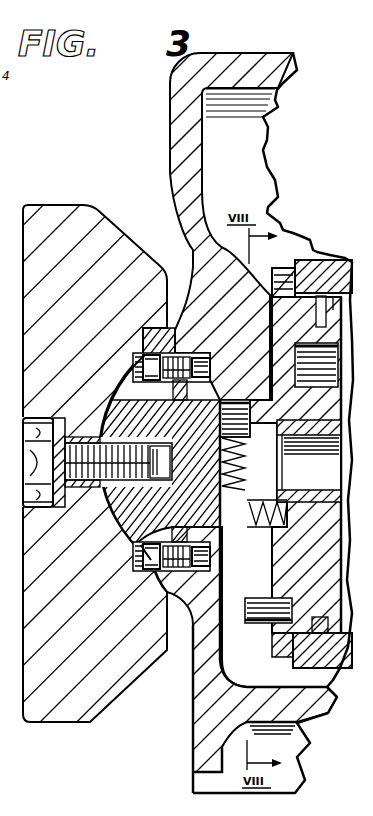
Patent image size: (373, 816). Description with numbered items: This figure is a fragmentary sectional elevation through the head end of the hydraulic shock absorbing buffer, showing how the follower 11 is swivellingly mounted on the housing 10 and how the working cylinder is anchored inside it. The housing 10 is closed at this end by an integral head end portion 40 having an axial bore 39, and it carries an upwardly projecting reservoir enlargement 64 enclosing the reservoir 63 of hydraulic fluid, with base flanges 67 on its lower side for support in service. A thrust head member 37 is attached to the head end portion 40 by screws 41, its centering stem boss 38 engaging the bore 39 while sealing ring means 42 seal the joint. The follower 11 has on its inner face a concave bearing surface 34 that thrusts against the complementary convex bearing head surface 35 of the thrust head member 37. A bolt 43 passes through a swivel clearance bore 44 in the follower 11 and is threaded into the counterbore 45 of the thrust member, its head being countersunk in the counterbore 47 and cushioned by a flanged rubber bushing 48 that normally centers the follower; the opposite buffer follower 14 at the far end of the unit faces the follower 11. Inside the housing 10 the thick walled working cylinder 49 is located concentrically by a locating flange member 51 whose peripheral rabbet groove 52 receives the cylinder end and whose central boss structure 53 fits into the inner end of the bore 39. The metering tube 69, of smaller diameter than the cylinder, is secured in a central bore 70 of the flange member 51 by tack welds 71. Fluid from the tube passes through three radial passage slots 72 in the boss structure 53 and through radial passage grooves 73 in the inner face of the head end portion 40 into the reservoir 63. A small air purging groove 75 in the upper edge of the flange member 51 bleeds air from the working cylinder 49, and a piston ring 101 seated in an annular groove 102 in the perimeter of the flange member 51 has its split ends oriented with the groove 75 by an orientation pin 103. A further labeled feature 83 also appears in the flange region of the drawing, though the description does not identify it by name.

The housing 10 is at (296, 710).
The follower 11 is at (63, 220).
The buffer follower 14 is at (257, 603).
The bearing surface 34 is at (176, 346).
The bearing head surface 35 is at (143, 352).
The thrust head member 37 is at (123, 511).
The centering stem boss 38 is at (214, 397).
The bore 39 is at (244, 400).
The head end portion 40 is at (203, 648).
The screws 41 is at (192, 356).
The fluid sealing ring means 42 is at (133, 536).
The bolt 43 is at (64, 438).
The swivel clearance axial bore 44 is at (100, 494).
The threaded central counterbore 45 is at (147, 441).
The central counterbore 47 is at (46, 413).
The flanged rubber bushing 48 is at (73, 491).
The working cylinder 49 is at (332, 262).
The locating flange member 51 is at (292, 563).
The peripheral rabbet groove 52 is at (290, 660).
The central boss structure 53 is at (243, 446).
The reservoir 63 is at (262, 148).
The reservoir enlargement 64 is at (173, 118).
The base flanges 67 is at (200, 779).
The metering tube 69 is at (342, 490).
The central bore 70 is at (321, 442).
The tack welds 71 is at (282, 492).
The radial passage slots 72 is at (255, 508).
The radial passage grooves 73 is at (243, 458).
The air purging groove 75 is at (288, 273).
The threaded pocket 83 is at (305, 355).
The piston ring 101 is at (308, 637).
The piston ring groove 102 is at (313, 618).
The orientation pin 103 is at (318, 322).